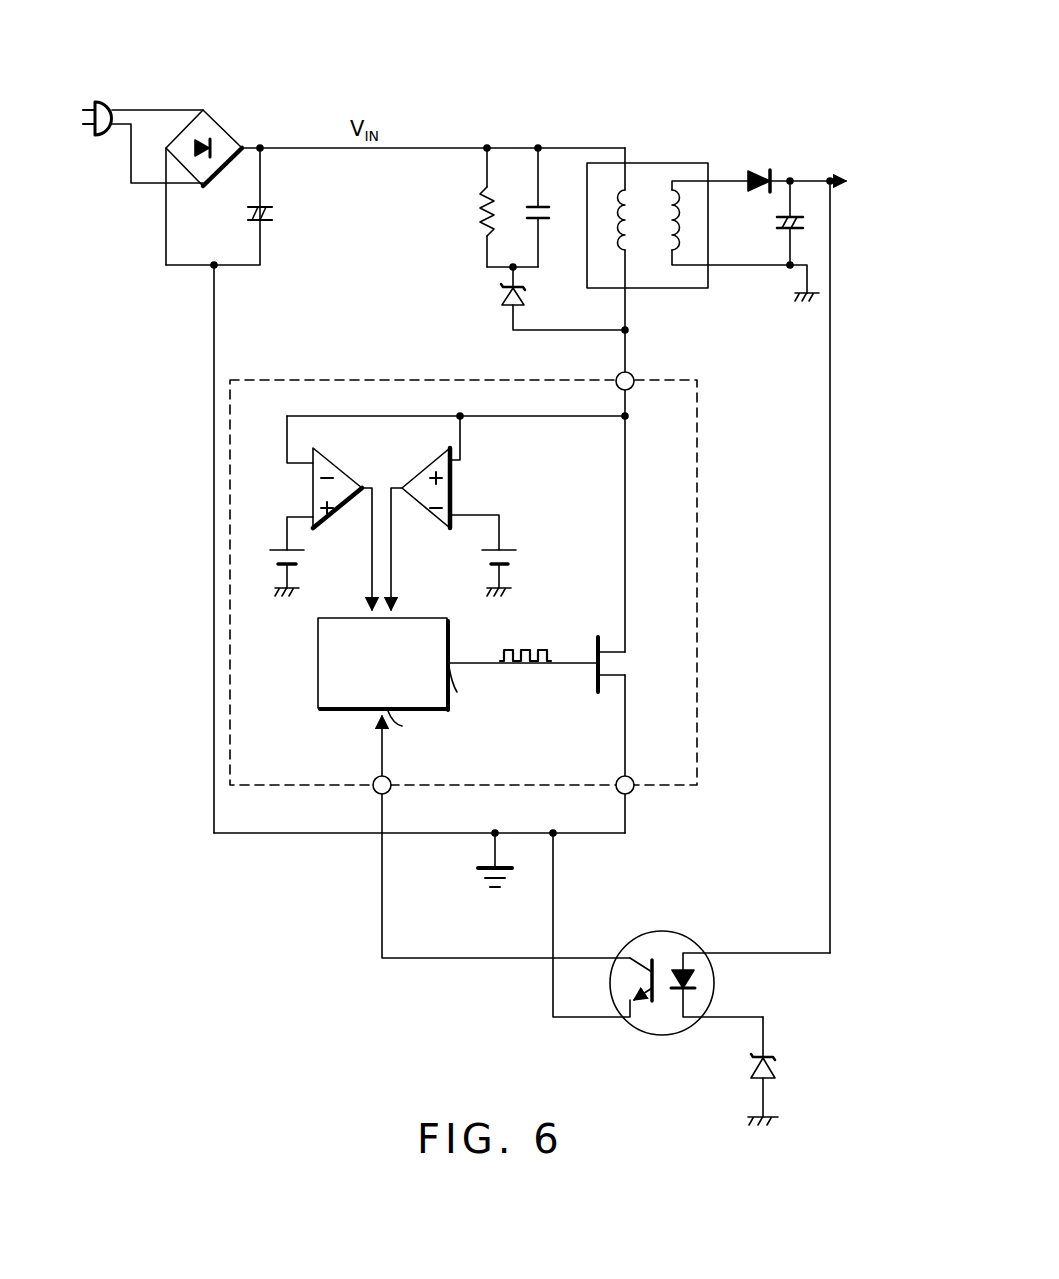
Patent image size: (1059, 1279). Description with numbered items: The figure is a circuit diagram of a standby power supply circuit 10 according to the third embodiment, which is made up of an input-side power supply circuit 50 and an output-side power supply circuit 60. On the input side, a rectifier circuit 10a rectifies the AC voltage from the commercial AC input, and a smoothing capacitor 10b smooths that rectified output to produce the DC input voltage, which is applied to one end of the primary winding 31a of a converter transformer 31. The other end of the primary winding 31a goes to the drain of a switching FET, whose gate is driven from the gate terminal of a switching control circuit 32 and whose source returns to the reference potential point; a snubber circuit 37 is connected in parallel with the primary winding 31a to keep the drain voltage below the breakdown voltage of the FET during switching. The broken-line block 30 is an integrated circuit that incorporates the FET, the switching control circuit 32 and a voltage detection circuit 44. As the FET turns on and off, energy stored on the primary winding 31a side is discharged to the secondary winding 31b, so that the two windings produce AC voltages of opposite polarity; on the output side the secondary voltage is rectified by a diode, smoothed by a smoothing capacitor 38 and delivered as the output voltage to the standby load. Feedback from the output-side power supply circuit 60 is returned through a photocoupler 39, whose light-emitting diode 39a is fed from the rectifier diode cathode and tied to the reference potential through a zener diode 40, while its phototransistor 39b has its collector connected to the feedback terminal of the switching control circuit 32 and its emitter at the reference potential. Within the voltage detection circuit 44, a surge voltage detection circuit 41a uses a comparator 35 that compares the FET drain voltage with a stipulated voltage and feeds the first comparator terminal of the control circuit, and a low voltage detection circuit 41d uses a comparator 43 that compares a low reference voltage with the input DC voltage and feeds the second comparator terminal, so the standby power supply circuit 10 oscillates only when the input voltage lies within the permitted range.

The standby power supply circuit 10 is at (441, 70).
The rectifier circuit 10a is at (228, 104).
The smoothing capacitor 10b is at (268, 204).
The input-side power supply circuit 50 is at (620, 112).
The snubber circuit 37 is at (503, 170).
The converter transformer 31 is at (680, 225).
The primary winding 31a is at (620, 240).
The secondary winding 31b is at (672, 256).
The output-side power supply circuit 60 is at (786, 75).
The smoothing capacitor 38 is at (775, 224).
The IC 30 is at (697, 735).
The low voltage detection circuit 41d is at (286, 486).
The surge voltage detection circuit 41a is at (474, 464).
The comparator 43 is at (326, 525).
The voltage detection circuit 44 is at (372, 440).
The comparator 35 is at (453, 488).
The switching control circuit 32 is at (350, 711).
The photocoupler 39 is at (700, 957).
The light-emitting diode 39a is at (700, 978).
The phototransistor 39b is at (622, 977).
The zener diode 40 is at (742, 1073).